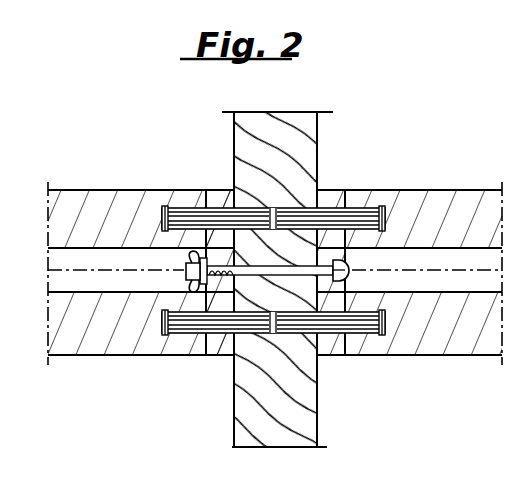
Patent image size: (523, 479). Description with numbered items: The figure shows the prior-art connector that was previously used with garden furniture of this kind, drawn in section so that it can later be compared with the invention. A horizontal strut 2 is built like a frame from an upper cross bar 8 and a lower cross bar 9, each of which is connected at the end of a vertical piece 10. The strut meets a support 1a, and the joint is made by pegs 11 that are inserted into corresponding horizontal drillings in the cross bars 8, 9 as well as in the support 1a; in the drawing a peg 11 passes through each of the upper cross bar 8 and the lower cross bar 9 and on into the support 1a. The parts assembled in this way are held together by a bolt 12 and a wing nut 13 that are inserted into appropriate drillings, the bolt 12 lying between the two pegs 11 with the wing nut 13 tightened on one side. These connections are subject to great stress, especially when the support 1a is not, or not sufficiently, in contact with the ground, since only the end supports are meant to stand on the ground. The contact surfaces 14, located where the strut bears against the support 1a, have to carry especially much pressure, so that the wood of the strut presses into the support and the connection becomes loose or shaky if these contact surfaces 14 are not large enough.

The support 1a is at (289, 128).
The horizontal strut 2 is at (428, 190).
The upper cross bar 8 is at (82, 201).
The lower cross bar 9 is at (70, 321).
The vertical piece 10 is at (218, 347).
The peg 11 is at (181, 214).
The bolt 12 is at (349, 270).
The wing nut 13 is at (186, 265).
The contact surface 14 is at (224, 200).